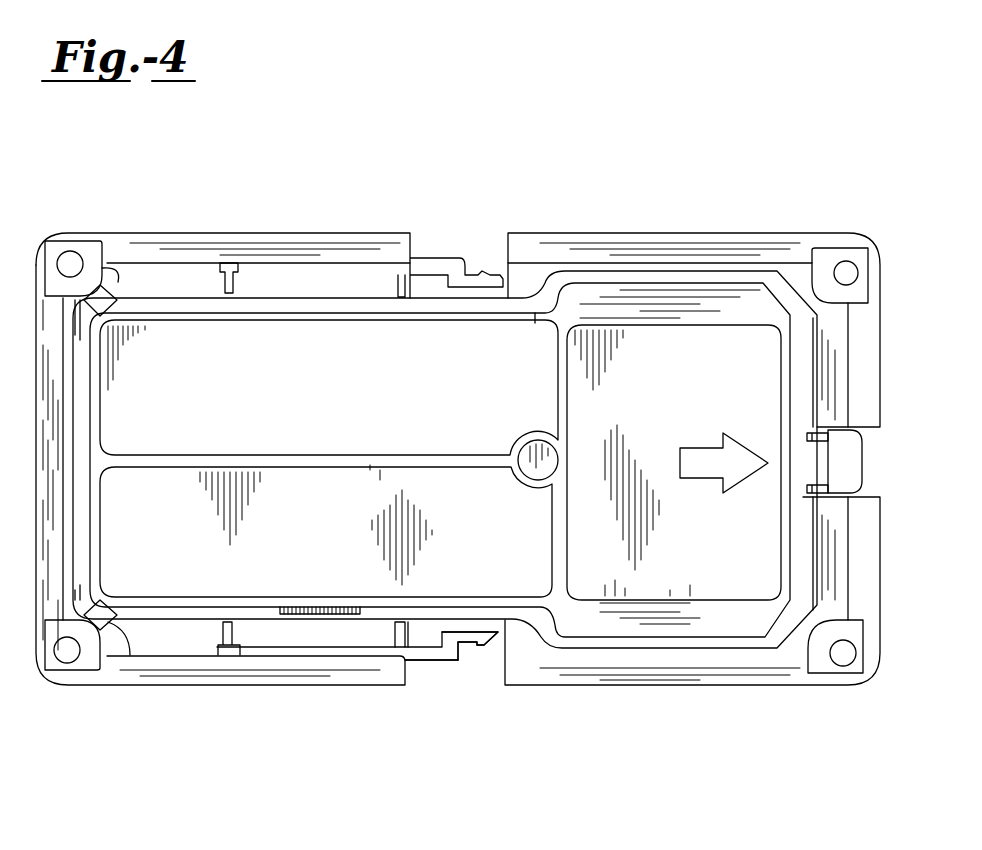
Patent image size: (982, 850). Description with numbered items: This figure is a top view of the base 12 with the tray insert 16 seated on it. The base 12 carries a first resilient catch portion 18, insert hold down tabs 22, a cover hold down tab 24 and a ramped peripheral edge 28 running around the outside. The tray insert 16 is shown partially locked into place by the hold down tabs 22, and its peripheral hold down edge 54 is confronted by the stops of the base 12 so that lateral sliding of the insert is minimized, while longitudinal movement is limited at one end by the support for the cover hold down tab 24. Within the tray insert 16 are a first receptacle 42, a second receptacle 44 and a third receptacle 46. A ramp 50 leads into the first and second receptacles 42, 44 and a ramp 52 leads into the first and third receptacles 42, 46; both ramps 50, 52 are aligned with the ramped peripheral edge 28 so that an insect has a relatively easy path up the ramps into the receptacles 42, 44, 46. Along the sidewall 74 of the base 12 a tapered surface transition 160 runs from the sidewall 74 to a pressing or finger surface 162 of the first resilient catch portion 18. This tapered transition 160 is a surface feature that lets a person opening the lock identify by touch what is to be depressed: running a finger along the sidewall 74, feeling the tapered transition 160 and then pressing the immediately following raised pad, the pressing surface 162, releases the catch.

The base 12 is at (323, 687).
The tray insert 16 is at (295, 618).
The first resilient catch portion 18 is at (437, 667).
The insert hold down tabs 22 is at (107, 613).
The cover hold down tab 24 is at (858, 447).
The ramped peripheral edge 28 is at (640, 250).
The first receptacle 42 is at (732, 543).
The second receptacle 44 is at (315, 540).
The third receptacle 46 is at (320, 414).
The ramp 50 is at (640, 607).
The ramp 52 is at (718, 313).
The peripheral hold down edge 54 is at (173, 297).
The sidewall 74 is at (348, 660).
The tapered surface transition 160 is at (402, 662).
The pressing surface 162 is at (427, 663).